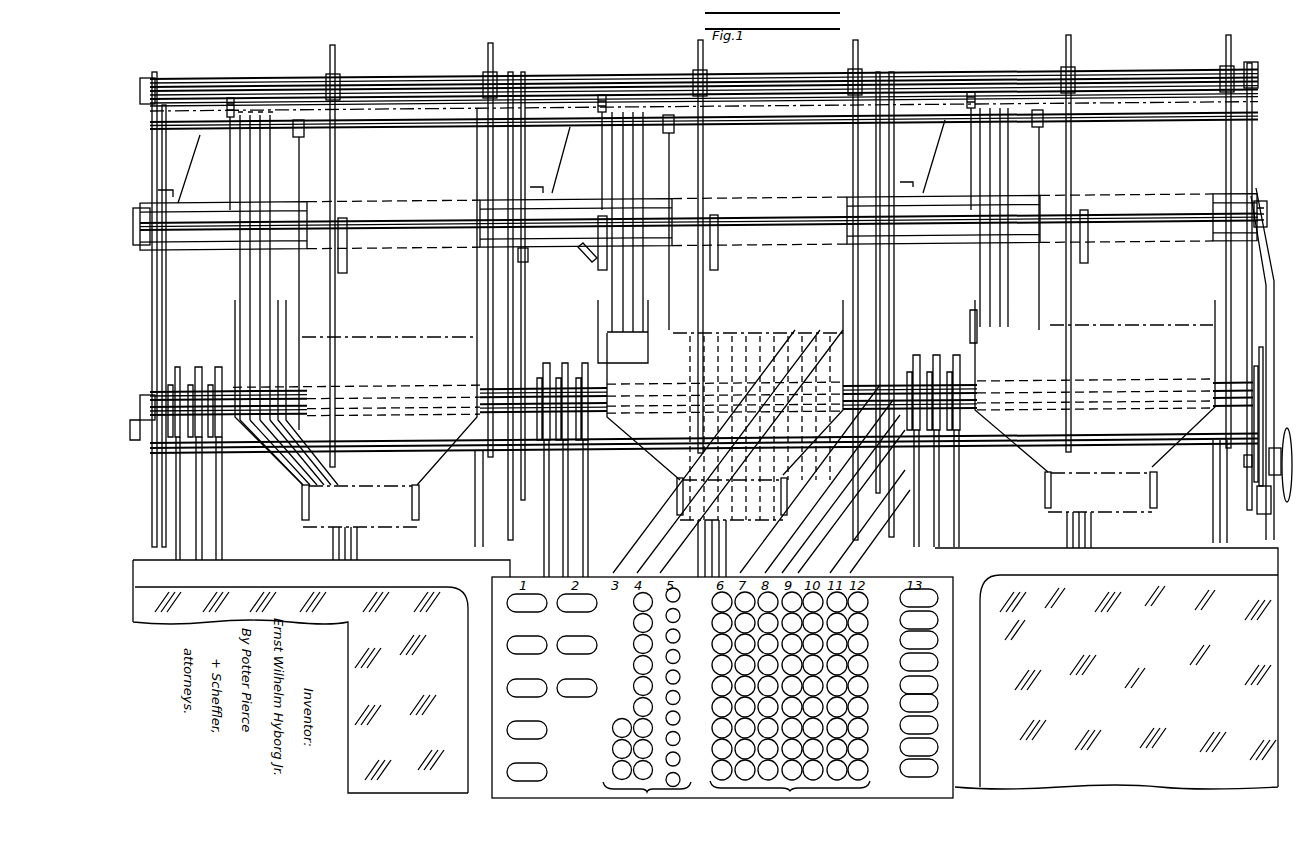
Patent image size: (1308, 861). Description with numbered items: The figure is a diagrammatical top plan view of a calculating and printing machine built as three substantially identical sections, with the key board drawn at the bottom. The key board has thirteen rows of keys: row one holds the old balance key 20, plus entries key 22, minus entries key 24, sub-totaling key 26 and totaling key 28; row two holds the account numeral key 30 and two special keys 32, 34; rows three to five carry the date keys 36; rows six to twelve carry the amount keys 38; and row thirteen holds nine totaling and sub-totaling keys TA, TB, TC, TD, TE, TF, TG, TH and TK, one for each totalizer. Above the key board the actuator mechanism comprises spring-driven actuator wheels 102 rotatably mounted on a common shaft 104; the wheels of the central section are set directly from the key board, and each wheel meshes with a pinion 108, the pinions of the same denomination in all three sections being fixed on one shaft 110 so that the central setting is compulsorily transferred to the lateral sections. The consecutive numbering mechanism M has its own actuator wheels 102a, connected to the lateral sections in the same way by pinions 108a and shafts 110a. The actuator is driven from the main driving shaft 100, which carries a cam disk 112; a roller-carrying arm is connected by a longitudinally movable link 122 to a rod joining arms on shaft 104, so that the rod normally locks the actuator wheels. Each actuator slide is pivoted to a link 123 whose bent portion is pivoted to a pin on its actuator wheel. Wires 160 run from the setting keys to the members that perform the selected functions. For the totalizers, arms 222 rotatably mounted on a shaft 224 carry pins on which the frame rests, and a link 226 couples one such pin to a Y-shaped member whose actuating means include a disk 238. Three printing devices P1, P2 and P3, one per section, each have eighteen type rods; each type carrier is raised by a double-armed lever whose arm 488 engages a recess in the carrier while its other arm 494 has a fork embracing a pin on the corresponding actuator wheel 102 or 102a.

The main driving shaft 100 is at (883, 343).
The actuator wheel 102 is at (300, 181).
The actuator wheel of the numbering counter 102a is at (248, 122).
The common shaft 104 is at (523, 252).
The pinion 108 is at (297, 119).
The pinion of the numbering counter 108a is at (230, 96).
The shaft 110 is at (775, 127).
The shaft of the numbering counter 110a is at (390, 107).
The cam disk 112 is at (1267, 352).
The link 122 is at (1272, 287).
The link 123 is at (640, 500).
The wire 160 is at (203, 518).
The arm 222 is at (347, 259).
The shaft 224 is at (413, 224).
The link 226 is at (590, 250).
The disk 238 is at (217, 362).
The arm of double-armed lever 488 is at (285, 470).
The arm of double-armed lever 494 is at (240, 343).
The consecutive numbering mechanism M is at (638, 350).
The printing device P1 is at (403, 517).
The printing device P2 is at (762, 517).
The printing device P3 is at (1143, 500).
The date keys 36 is at (634, 691).
The amount keys 38 is at (802, 692).
The old balance key 20 is at (527, 603).
The plus entries key 22 is at (527, 645).
The minus entries key 24 is at (527, 688).
The sub-totaling key 26 is at (527, 730).
The totaling key 28 is at (527, 772).
The account numeral key 30 is at (577, 603).
The special key 32 is at (577, 645).
The special key 34 is at (577, 688).
The totaling and sub-totaling key TA is at (919, 598).
The totaling and sub-totaling key TB is at (919, 620).
The totaling and sub-totaling key TC is at (919, 640).
The totaling and sub-totaling key TD is at (919, 662).
The totaling and sub-totaling key TE is at (919, 685).
The totaling and sub-totaling key TF is at (919, 703).
The totaling and sub-totaling key TG is at (919, 725).
The totaling and sub-totaling key TH is at (919, 747).
The totaling and sub-totaling key TK is at (919, 768).